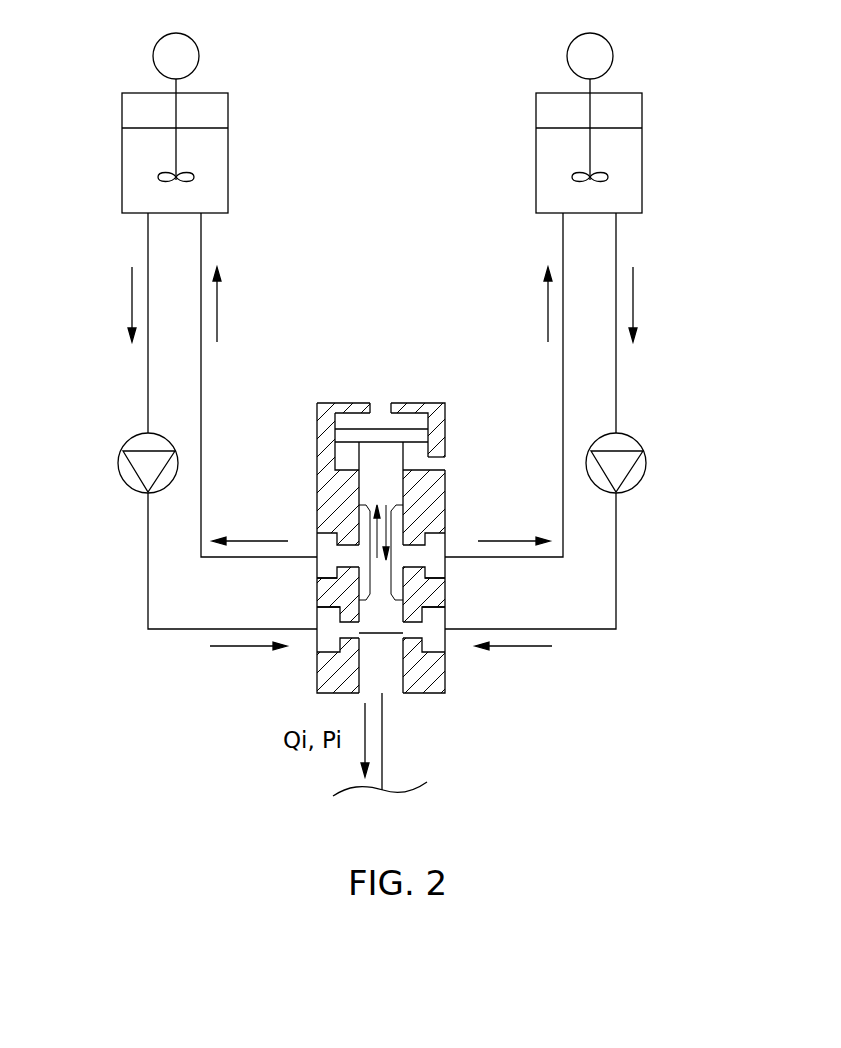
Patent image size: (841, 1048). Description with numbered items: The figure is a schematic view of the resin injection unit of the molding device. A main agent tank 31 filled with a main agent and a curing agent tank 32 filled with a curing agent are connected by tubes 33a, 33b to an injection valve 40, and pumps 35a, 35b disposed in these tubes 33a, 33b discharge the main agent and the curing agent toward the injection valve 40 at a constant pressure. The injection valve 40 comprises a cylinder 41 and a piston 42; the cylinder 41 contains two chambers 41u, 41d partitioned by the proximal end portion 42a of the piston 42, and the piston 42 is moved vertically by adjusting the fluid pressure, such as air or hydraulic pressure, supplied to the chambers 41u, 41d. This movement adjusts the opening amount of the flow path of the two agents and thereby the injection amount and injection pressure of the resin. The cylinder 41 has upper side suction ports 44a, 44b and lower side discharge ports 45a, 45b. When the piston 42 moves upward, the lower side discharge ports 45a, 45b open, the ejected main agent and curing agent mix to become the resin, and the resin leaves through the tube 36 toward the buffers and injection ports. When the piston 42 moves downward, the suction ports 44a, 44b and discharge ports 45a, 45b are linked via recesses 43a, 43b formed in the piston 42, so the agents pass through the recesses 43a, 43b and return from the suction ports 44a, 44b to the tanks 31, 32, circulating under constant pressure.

The main agent tank 31 is at (137, 108).
The curing agent tank 32 is at (551, 108).
The tube 33a is at (201, 230).
The tube 33b is at (616, 230).
The pump 35a is at (119, 447).
The pump 35b is at (645, 450).
The tube 36 is at (382, 738).
The injection valve 40 is at (445, 408).
The cylinder 41 is at (358, 415).
The chamber 41u is at (365, 416).
The chamber 41d is at (430, 468).
The piston 42 is at (390, 488).
The proximal end portion 42a is at (400, 437).
The recess 43a is at (330, 597).
The recess 43b is at (436, 597).
The upper side suction port 44a is at (322, 548).
The upper side suction port 44b is at (442, 543).
The lower side discharge port 45a is at (329, 638).
The lower side discharge port 45b is at (438, 630).